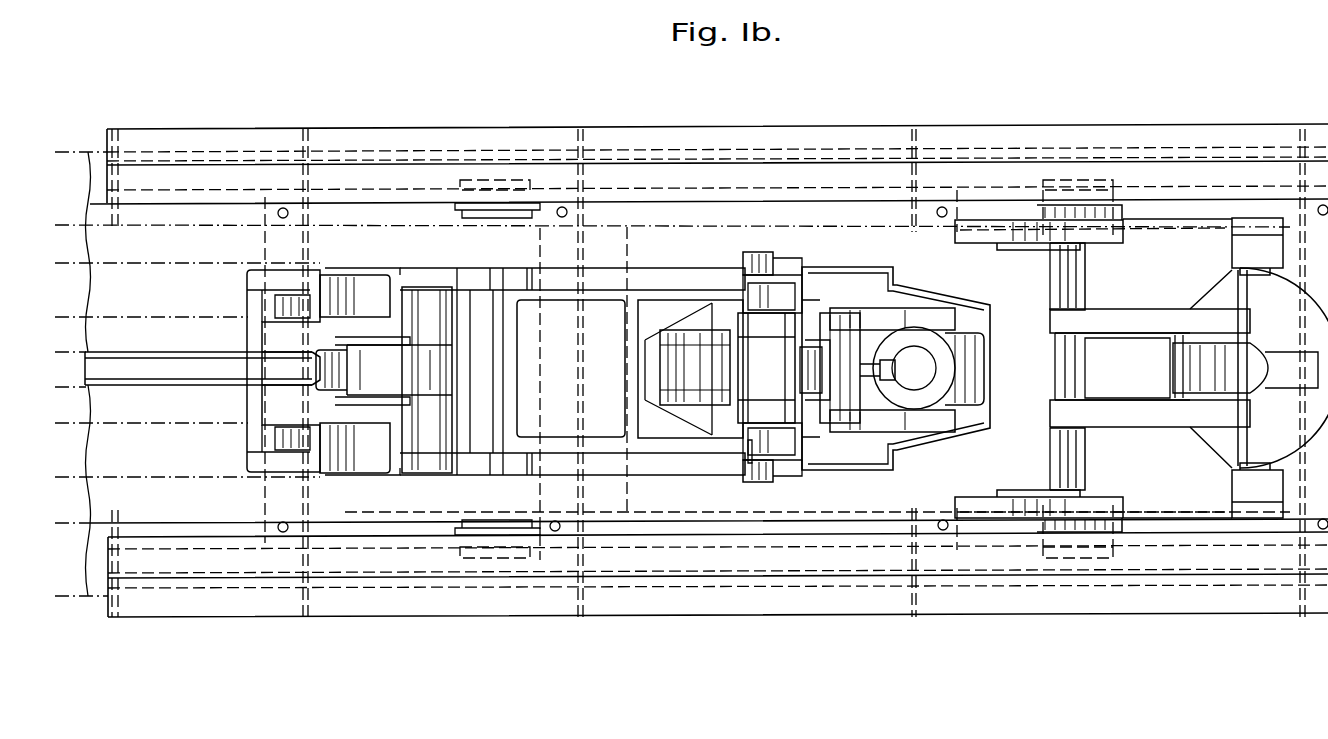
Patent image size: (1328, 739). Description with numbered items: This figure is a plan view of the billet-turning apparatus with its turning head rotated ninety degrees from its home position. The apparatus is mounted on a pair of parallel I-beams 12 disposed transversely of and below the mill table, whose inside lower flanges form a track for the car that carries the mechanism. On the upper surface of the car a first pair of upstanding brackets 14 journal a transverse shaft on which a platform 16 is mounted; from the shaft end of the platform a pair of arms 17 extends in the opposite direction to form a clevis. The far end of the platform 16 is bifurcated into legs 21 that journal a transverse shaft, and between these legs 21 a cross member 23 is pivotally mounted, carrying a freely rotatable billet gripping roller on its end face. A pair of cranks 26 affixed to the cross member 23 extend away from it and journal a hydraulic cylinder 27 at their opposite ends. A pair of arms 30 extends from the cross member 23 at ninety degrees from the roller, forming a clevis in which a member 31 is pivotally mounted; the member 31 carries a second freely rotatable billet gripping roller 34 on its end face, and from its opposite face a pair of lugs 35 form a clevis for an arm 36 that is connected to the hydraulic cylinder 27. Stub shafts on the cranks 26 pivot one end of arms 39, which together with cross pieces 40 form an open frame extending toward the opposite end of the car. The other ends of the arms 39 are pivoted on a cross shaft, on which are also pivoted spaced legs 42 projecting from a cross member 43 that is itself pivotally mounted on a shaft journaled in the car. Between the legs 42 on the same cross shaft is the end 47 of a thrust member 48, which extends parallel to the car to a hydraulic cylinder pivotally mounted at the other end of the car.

The I-beams 12 is at (1327, 122).
The upstanding brackets 14 is at (1123, 234).
The platform 16 is at (1049, 292).
The arms 17 is at (1143, 323).
The legs 21 is at (840, 262).
The cross member 23 is at (748, 463).
The cranks 26 is at (888, 315).
The hydraulic cylinder 27 is at (966, 365).
The arms 30 is at (770, 290).
The member 31 is at (766, 367).
The second billet gripping roller 34 is at (702, 352).
The lugs 35 is at (828, 340).
The arm 36 is at (852, 363).
The arms 39 is at (652, 443).
The cross pieces 40 is at (633, 366).
The legs 42 is at (375, 325).
The cross member 43 is at (358, 450).
The end of thrust member 47 is at (403, 365).
The thrust member 48 is at (188, 363).